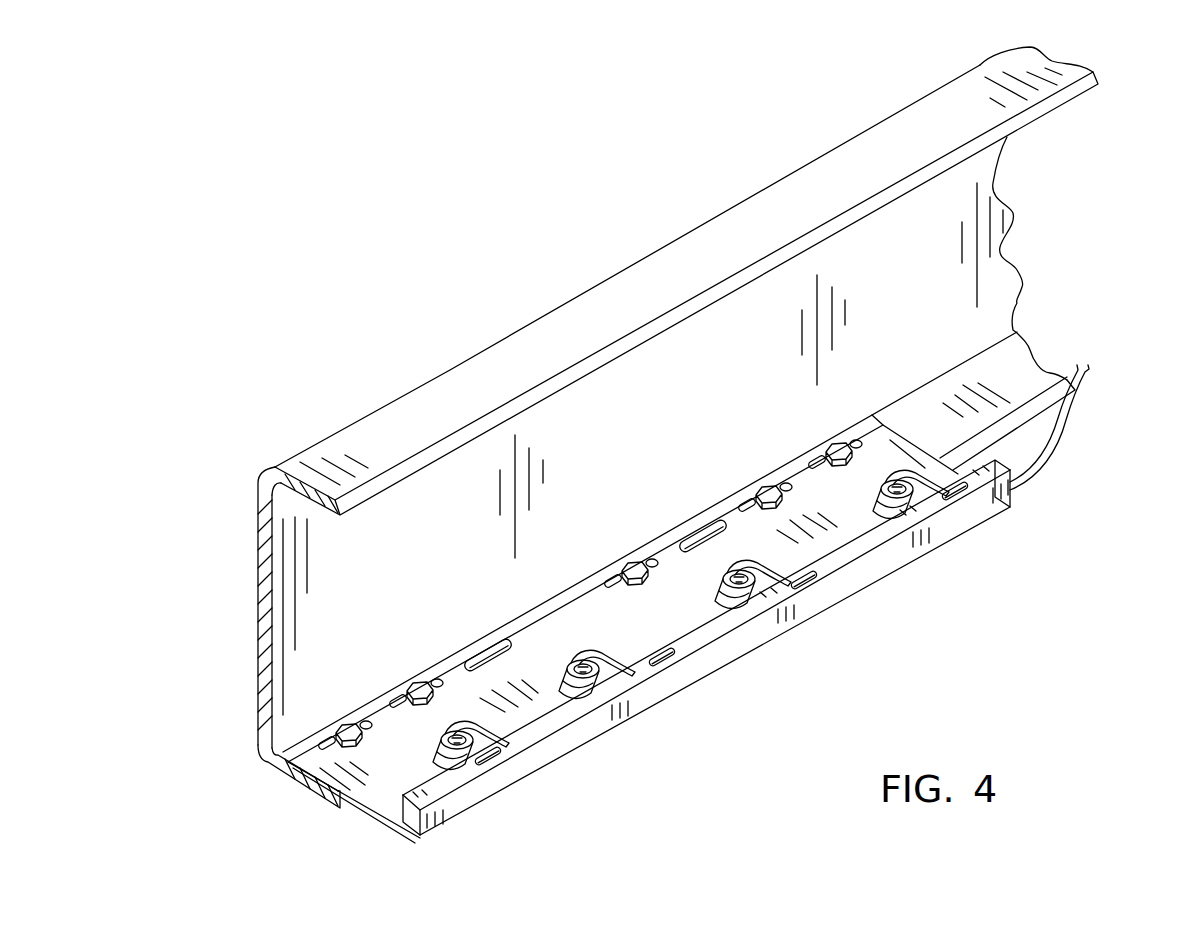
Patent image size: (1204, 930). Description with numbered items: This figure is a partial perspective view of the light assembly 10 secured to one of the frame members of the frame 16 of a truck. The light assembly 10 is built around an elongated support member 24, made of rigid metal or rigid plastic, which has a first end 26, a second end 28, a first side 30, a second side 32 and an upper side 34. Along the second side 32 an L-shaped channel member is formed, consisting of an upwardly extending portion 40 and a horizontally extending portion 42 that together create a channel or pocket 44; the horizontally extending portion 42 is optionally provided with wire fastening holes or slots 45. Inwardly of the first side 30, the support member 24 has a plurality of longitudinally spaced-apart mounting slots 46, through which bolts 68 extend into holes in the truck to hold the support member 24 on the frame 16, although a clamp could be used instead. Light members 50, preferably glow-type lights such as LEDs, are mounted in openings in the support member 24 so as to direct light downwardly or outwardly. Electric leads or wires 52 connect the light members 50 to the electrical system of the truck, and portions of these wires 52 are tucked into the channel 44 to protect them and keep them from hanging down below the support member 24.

The light assembly 10 is at (768, 438).
The frame 16 is at (624, 255).
The elongated support member 24 is at (355, 789).
The first end 26 is at (300, 780).
The second end 28 is at (910, 442).
The first side 30 is at (457, 653).
The second side 32 is at (420, 838).
The upper side 34 is at (680, 626).
The upwardly extending portion 40 is at (428, 806).
The horizontally extending portion 42 is at (548, 722).
The channel 44 is at (422, 841).
The wire fastening holes or slots 45 is at (955, 497).
The mounting slots 46 is at (747, 498).
The light member 50 is at (735, 605).
The electric leads or wires 52 is at (630, 652).
The bolts 68 is at (632, 563).